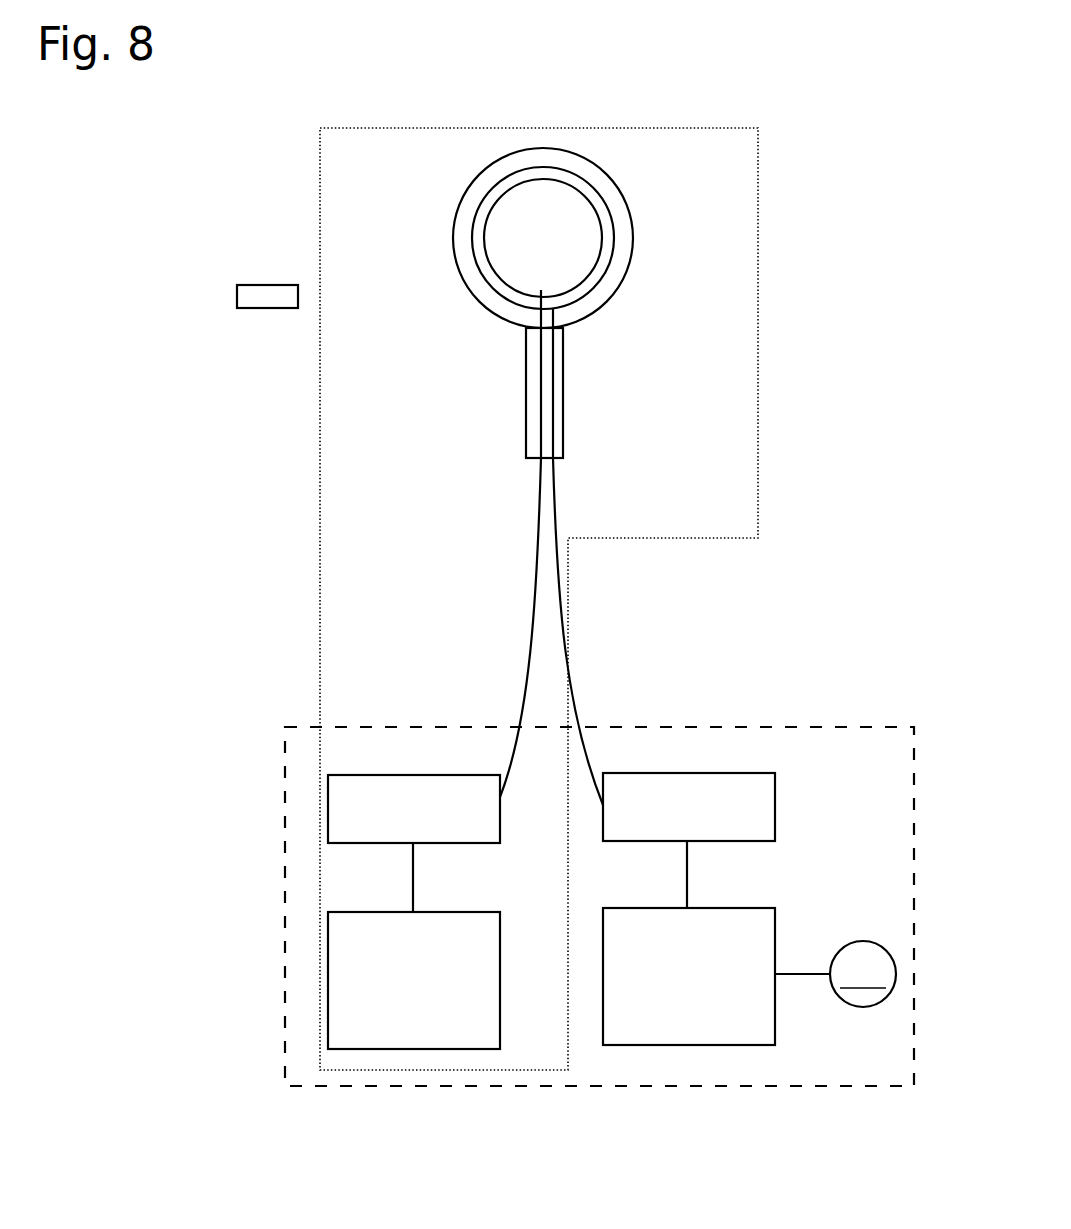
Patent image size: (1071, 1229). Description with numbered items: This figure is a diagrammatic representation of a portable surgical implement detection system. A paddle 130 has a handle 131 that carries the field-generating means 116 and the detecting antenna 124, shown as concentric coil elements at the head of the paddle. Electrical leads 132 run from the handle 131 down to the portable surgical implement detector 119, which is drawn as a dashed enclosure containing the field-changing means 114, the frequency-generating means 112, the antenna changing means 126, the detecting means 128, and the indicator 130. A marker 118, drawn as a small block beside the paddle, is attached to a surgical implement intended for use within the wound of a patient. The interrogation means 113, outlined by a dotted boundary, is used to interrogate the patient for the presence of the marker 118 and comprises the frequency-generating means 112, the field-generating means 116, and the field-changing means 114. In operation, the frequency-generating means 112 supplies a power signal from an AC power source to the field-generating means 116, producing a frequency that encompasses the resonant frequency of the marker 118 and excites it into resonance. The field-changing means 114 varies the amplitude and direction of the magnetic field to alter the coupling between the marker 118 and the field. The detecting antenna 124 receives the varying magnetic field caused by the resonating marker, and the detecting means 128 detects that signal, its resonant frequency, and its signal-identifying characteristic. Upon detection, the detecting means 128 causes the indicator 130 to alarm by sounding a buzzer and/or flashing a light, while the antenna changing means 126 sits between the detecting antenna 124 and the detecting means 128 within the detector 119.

The frequency-generating means 112 is at (390, 996).
The interrogation means 113 is at (758, 218).
The field-changing means 114 is at (390, 827).
The field-generating means 116 is at (618, 240).
The marker 118 is at (245, 285).
The portable surgical implement detector 119 is at (622, 727).
The detecting antenna 124 is at (573, 287).
The antenna changing means 126 is at (664, 821).
The detecting means 128 is at (664, 993).
The paddle 130 is at (453, 240).
The handle 131 is at (526, 388).
The electrical leads 132 is at (543, 625).